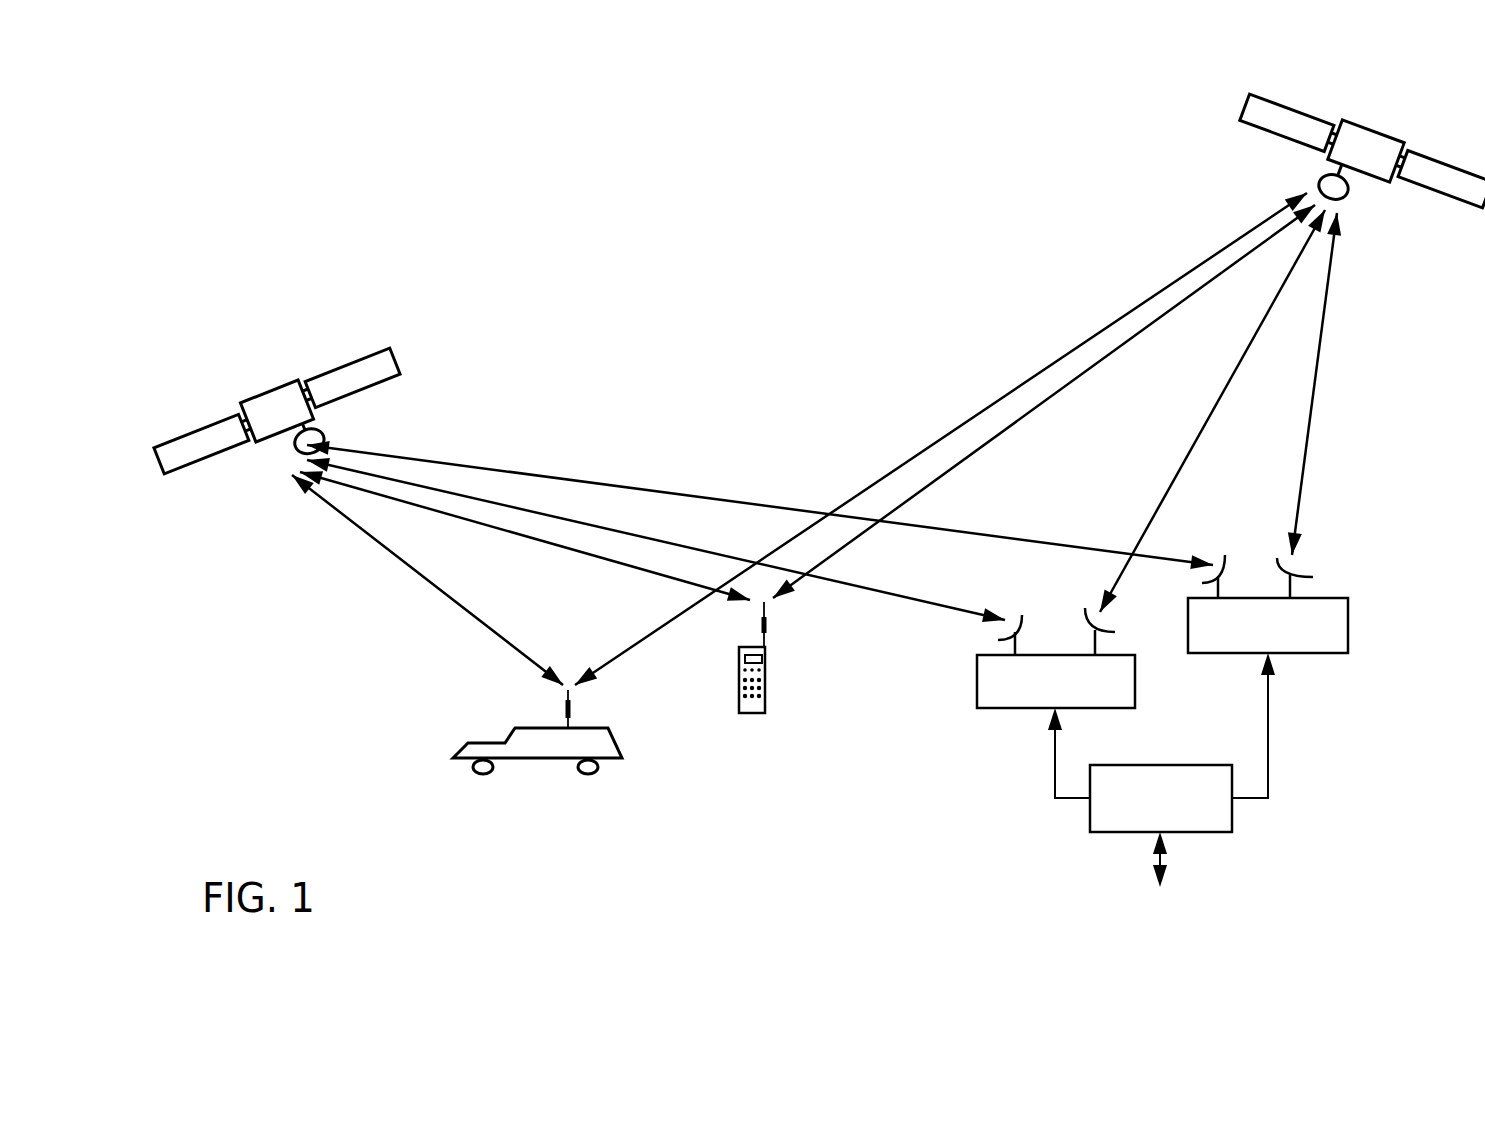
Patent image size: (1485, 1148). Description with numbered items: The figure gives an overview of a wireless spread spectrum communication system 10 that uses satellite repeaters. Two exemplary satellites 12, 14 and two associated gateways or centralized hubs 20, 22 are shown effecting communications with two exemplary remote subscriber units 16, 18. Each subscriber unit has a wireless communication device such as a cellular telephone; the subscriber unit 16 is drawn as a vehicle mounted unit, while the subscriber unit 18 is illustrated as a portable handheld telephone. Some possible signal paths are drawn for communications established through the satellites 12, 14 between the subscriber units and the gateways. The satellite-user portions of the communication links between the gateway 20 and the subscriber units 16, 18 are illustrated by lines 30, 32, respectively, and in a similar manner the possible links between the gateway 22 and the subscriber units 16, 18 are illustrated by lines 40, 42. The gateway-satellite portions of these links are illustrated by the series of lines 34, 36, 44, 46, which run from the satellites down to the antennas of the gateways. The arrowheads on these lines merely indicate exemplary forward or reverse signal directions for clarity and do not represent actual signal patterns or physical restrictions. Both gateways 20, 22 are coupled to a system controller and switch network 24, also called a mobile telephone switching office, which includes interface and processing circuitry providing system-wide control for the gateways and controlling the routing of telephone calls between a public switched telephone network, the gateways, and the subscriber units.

The communication system 10 is at (600, 241).
The satellite 12 is at (240, 404).
The satellite 14 is at (1405, 148).
The subscriber unit 16 is at (545, 728).
The subscriber unit 18 is at (757, 713).
The gateway 20 is at (1095, 708).
The gateway 22 is at (1295, 653).
The system controller and switch network 24 is at (1217, 833).
The line 30 is at (423, 580).
The line 32 is at (557, 546).
The line 34 is at (640, 535).
The line 36 is at (648, 490).
The line 40 is at (1088, 338).
The line 42 is at (1063, 387).
The line 44 is at (1218, 401).
The line 46 is at (1314, 393).